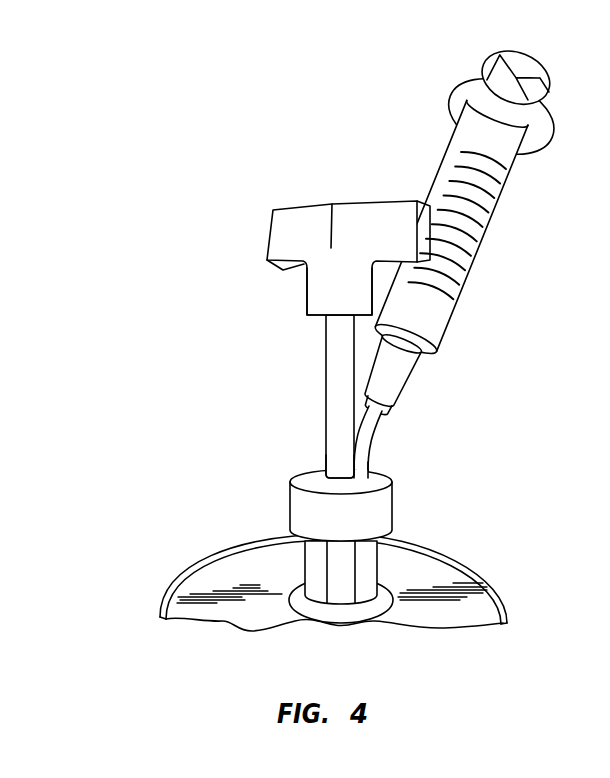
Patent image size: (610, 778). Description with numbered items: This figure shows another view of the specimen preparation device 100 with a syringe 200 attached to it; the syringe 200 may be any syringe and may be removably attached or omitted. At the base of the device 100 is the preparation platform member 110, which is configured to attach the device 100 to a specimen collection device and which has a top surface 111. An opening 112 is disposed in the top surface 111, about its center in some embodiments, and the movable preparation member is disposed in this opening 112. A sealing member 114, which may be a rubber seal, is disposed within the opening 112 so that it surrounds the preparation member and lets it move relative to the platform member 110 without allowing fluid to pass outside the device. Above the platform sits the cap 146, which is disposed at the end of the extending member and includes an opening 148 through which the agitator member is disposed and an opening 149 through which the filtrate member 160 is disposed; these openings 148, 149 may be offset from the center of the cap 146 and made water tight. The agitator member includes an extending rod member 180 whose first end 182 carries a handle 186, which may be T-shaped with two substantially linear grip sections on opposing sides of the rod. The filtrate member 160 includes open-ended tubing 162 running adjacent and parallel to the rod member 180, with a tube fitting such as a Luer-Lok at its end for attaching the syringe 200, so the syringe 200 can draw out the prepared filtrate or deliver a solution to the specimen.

The preparation device 100 is at (337, 110).
The preparation platform member 110 is at (301, 613).
The top surface 111 is at (263, 612).
The opening 112 is at (377, 593).
The sealing member 114 is at (280, 582).
The cap 146 is at (317, 510).
The opening 148 is at (319, 468).
The opening 149 is at (375, 473).
The filtrate member 160 is at (383, 427).
The tubing 162 is at (408, 373).
The extending rod member 180 is at (322, 382).
The first end 182 is at (320, 320).
The handle 186 is at (295, 228).
The syringe 200 is at (470, 249).